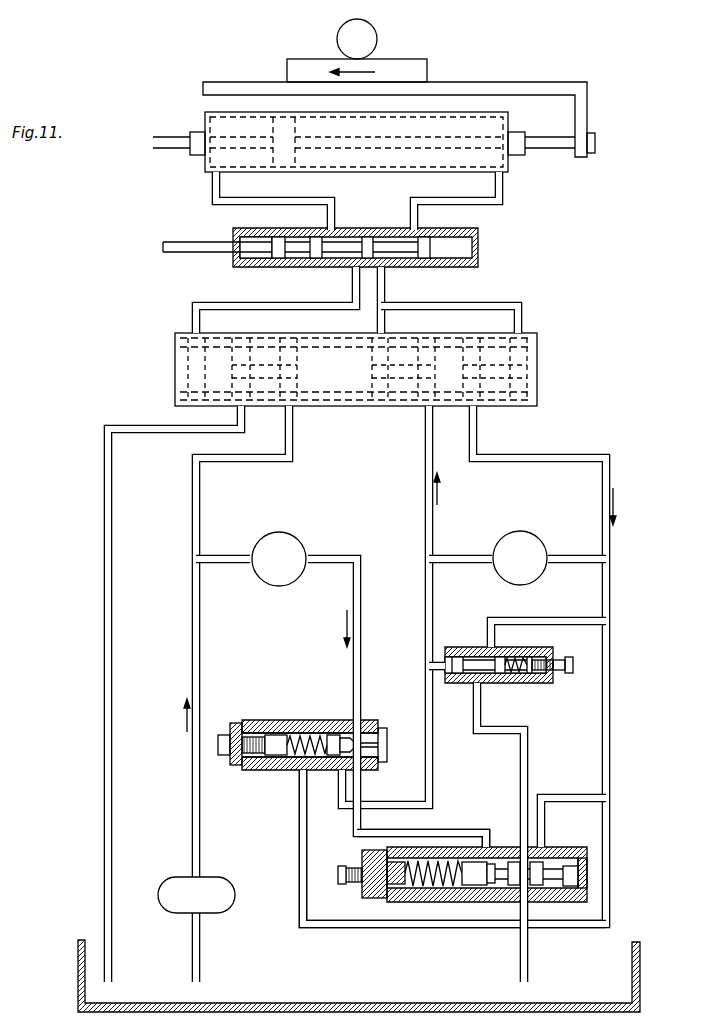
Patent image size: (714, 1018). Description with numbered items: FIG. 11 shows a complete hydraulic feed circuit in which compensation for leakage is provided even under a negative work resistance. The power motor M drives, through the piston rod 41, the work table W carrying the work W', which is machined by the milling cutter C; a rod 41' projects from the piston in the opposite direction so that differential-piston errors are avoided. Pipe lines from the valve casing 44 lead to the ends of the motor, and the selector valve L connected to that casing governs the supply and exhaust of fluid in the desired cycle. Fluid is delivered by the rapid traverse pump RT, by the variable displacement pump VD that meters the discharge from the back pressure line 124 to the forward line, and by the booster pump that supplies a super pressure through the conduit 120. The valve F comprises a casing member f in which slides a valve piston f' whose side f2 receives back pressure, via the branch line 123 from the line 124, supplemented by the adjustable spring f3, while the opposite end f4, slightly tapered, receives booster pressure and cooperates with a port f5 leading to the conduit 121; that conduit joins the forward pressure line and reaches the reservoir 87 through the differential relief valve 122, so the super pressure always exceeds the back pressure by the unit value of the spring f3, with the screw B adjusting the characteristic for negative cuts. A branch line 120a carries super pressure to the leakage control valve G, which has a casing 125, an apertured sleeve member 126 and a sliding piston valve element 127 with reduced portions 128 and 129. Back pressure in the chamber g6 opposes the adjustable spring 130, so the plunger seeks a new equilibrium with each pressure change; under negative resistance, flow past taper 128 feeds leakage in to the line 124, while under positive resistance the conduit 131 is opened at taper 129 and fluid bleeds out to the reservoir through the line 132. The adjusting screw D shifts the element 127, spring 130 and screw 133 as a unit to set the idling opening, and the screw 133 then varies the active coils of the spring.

The milling cutter C is at (377, 39).
The work W' is at (376, 64).
The work table W is at (395, 106).
The rod 41' is at (177, 135).
The piston rod 41 is at (551, 156).
The power motor M is at (200, 167).
The valve casing 44 is at (481, 243).
The selector valve L is at (540, 368).
The variable displacement pump VD is at (520, 558).
The conduit 120 is at (364, 643).
The branch line 120a is at (485, 832).
The conduit 121 is at (345, 804).
The differential relief valve 122 is at (481, 684).
The branch line 123 is at (299, 868).
The back pressure line 124 is at (611, 648).
The casing 125 is at (468, 887).
The apertured sleeve member 126 is at (563, 847).
The piston valve element 127 is at (553, 869).
The reduced portion 128 is at (490, 882).
The reduced portion 129 is at (537, 882).
The adjustable spring 130 is at (433, 884).
The conduit 131 is at (560, 797).
The line 132 is at (529, 965).
The screw 133 is at (348, 884).
The reservoir 87 is at (287, 1003).
The rapid traverse pump RT is at (196, 895).
The screw B is at (231, 733).
The casing member f is at (310, 724).
The valve F is at (288, 721).
The valve piston f' is at (336, 723).
The side of valve piston f2 is at (320, 771).
The adjustable spring f3 is at (287, 769).
The end of valve plunger f4 is at (380, 727).
The port f5 is at (352, 761).
The adjusting screw D is at (370, 898).
The leakage control valve G is at (474, 904).
The chamber g6 is at (593, 885).